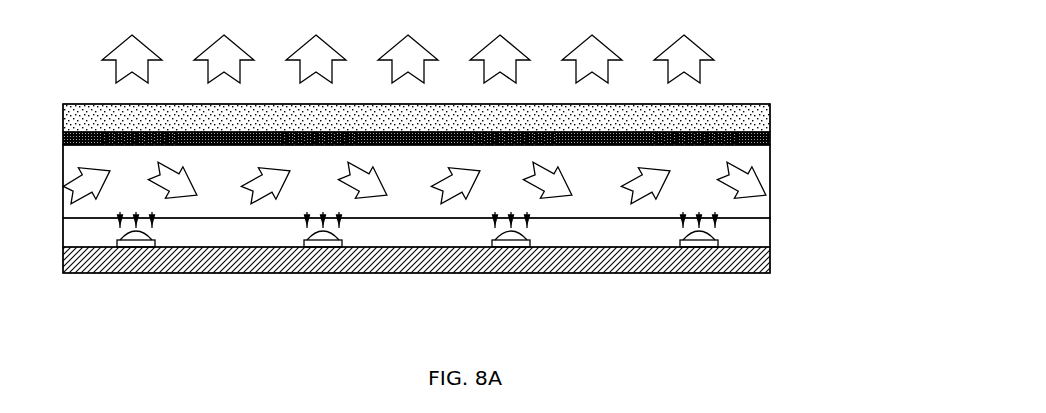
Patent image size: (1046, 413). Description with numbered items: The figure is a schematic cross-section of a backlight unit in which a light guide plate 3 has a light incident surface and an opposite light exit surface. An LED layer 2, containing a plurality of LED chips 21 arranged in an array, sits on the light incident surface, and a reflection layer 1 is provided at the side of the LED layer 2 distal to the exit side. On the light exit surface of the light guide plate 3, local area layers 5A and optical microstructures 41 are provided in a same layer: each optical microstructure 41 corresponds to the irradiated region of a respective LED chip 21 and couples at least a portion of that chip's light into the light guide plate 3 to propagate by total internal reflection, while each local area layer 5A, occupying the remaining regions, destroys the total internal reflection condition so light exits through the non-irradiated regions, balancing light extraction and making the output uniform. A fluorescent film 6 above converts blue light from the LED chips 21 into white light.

The reflection layer 1 is at (760, 263).
The LED layer 2 is at (728, 235).
The LED chip 21 is at (698, 245).
The light guide plate 3 is at (755, 209).
The optical microstructure 41 is at (690, 137).
The local area layer 5A is at (768, 142).
The fluorescent film 6 is at (760, 123).